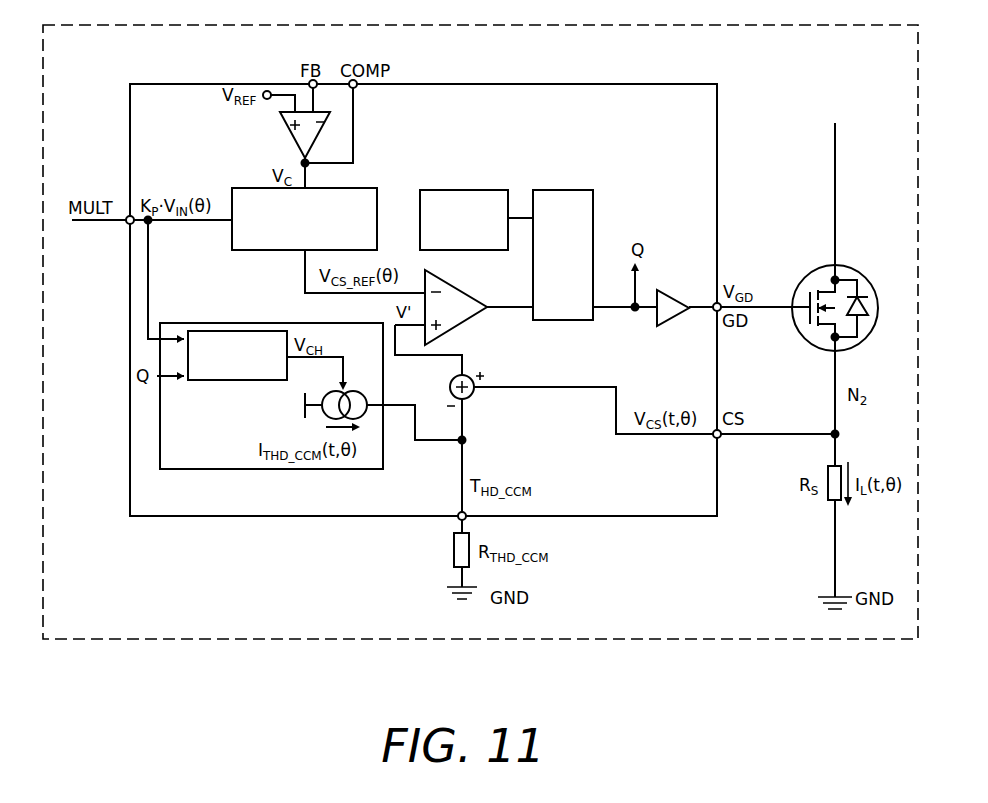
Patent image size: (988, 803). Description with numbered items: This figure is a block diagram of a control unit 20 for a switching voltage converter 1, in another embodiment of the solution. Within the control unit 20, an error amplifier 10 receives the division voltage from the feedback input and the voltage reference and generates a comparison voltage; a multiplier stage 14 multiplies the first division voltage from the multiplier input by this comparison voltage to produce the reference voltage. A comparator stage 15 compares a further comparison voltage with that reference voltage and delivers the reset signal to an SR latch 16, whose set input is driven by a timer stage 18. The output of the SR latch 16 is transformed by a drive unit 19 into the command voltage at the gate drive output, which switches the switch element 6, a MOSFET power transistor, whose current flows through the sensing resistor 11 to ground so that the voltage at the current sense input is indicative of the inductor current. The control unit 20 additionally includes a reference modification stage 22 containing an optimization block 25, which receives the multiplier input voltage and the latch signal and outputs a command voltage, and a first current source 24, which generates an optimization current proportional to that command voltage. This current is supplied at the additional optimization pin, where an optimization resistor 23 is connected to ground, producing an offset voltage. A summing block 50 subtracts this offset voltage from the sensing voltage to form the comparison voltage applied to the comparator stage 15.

The voltage converter 1 is at (145, 643).
The control unit 20 is at (163, 520).
The error amplifier 10 is at (301, 135).
The multiplier stage 14 is at (378, 188).
The timer stage 18 is at (468, 190).
The SR latch 16 is at (596, 220).
The comparator stage 15 is at (460, 288).
The drive unit 19 is at (672, 298).
The switch element 6 is at (825, 285).
The summing block 50 is at (470, 378).
The reference modification stage 22 is at (222, 472).
The optimization block 25 is at (210, 382).
The first current source 24 is at (360, 392).
The optimization resistor 23 is at (455, 548).
The sensing resistor 11 is at (828, 495).